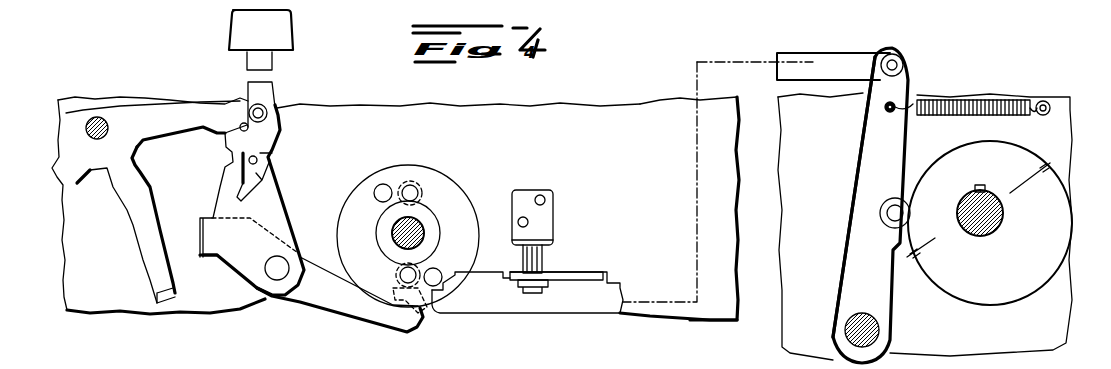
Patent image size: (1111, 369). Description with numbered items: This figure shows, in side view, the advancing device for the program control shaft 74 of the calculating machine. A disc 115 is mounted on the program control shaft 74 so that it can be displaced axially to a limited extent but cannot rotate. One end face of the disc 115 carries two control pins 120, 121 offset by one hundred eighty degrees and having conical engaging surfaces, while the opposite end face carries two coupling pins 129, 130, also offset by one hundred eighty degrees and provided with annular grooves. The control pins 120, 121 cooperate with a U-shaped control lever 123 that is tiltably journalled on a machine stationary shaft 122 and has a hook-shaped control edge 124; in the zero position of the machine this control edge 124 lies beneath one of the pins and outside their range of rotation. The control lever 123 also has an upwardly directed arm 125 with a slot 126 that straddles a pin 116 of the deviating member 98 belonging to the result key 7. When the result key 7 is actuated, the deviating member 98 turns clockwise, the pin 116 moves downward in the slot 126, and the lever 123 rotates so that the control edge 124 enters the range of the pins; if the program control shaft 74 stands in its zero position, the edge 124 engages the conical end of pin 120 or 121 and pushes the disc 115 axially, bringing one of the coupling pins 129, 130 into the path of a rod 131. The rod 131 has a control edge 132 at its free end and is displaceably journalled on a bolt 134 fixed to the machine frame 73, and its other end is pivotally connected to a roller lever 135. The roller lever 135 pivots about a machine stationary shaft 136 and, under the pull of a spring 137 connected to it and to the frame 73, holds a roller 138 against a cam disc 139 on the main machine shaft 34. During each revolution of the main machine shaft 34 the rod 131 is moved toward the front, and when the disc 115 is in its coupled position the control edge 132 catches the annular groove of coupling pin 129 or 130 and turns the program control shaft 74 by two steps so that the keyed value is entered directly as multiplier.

The result key 7 is at (283, 33).
The deviating member 98 is at (175, 108).
The machine frame 73 is at (651, 113).
The pin 116 is at (277, 150).
The slot 126 is at (255, 182).
The upwardly directed arm 125 is at (222, 193).
The machine stationary shaft 122 is at (277, 268).
The U-shaped control lever 123 is at (328, 303).
The disc 115 is at (463, 212).
The program control shaft 74 is at (427, 233).
The coupling pin 130 is at (383, 184).
The control pin 120 is at (410, 183).
The control pin 121 is at (400, 275).
The coupling pin 129 is at (470, 259).
The hook-shaped control edge 124 is at (425, 320).
The control edge 132 is at (445, 300).
The rod 131 is at (590, 307).
The bolt 134 is at (542, 267).
The cam disc 139 is at (943, 283).
The main machine shaft 34 is at (995, 213).
The roller lever 135 is at (870, 143).
The machine stationary shaft 136 is at (845, 330).
The roller 138 is at (888, 210).
The spring 137 is at (950, 117).